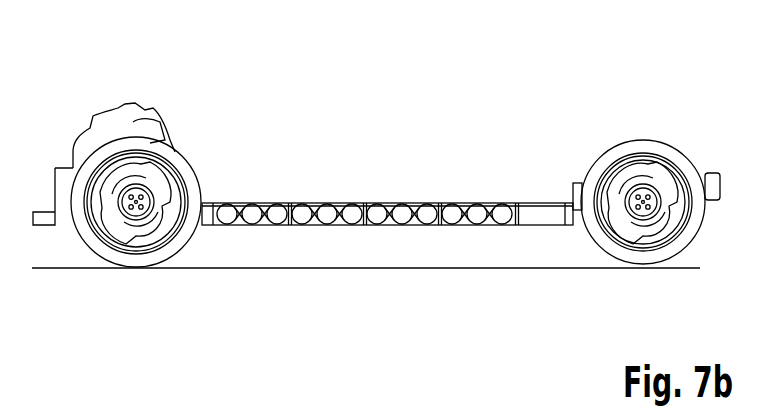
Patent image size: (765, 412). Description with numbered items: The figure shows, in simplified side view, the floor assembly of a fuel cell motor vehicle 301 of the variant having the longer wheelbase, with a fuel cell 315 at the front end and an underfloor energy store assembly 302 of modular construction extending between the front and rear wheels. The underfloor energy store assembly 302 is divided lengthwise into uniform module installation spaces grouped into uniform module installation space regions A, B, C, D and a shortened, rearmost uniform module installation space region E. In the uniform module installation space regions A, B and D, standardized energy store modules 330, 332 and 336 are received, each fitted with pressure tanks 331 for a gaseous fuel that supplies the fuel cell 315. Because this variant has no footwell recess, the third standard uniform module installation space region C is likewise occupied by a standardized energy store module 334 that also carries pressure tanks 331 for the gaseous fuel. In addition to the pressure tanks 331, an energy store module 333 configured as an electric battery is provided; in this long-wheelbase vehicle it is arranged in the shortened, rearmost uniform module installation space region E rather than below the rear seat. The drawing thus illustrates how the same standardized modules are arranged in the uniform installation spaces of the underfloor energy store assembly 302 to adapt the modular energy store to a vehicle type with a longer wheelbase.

The fuel cell motor vehicle 301 is at (398, 95).
The fuel cell 315 is at (149, 102).
The underfloor energy store assembly 302 is at (273, 175).
The standardized energy store module 330 is at (243, 203).
The standardized energy store module 332 is at (325, 203).
The standardized energy store module 334 is at (403, 203).
The standardized energy store module 336 is at (466, 203).
The energy store module configured as an electric battery 333 is at (542, 203).
The pressure tanks 331 is at (250, 225).
The uniform module installation space region A is at (260, 243).
The uniform module installation space region B is at (341, 243).
The third standard uniform module installation space region C is at (410, 243).
The fourth uniform module installation space region D is at (488, 243).
The shortened rearmost uniform module installation space region E is at (553, 243).